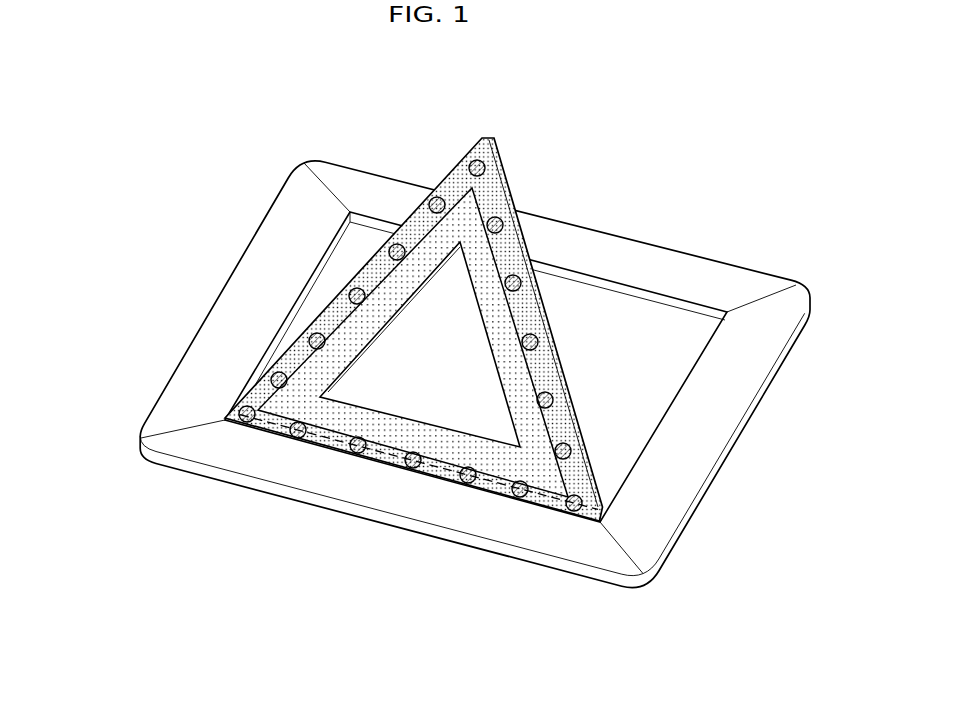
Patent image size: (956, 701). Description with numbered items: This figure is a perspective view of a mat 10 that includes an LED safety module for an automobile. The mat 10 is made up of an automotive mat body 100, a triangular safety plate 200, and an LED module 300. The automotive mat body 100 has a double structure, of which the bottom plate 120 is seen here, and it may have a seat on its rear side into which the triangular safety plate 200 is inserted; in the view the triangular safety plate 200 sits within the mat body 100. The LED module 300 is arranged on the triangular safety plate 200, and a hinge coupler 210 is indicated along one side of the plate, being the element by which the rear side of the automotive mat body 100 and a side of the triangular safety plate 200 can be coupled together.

The mat 10 is at (236, 70).
The automotive mat body 100 is at (158, 372).
The bottom plate 120 is at (230, 303).
The triangular safety plate 200 is at (507, 150).
The hinge coupler 210 is at (428, 476).
The LED module 300 is at (431, 203).